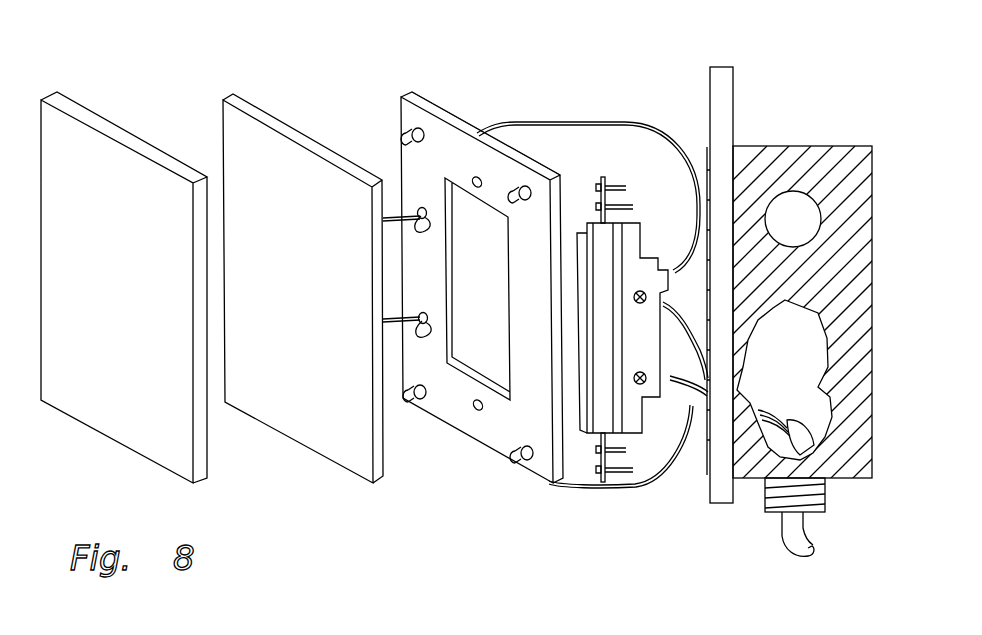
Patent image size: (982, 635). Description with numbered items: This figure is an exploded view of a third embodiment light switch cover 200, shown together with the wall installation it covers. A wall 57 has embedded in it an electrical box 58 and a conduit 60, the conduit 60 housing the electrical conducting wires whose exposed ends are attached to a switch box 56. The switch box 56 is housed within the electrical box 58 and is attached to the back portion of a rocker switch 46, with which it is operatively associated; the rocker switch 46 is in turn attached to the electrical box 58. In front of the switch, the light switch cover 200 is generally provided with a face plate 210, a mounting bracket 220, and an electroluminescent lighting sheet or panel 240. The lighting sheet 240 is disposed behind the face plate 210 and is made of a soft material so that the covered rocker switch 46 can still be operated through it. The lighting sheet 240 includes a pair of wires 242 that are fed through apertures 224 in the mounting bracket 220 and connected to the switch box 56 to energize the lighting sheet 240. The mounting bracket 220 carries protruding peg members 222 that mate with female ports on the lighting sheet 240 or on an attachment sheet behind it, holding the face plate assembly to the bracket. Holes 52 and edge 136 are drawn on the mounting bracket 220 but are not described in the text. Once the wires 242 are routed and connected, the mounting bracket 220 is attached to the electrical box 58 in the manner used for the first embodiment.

The light switch cover 200 is at (298, 75).
The face plate 210 is at (74, 321).
The electroluminescent lighting sheet 240 is at (280, 323).
The mounting bracket 220 is at (428, 168).
The protruding peg members 222 is at (420, 127).
The apertures 224 is at (420, 208).
The wires 242 is at (430, 228).
The mounting holes 52 is at (477, 178).
The plate edge 136 is at (497, 130).
The rocker switch 46 is at (622, 226).
The switch box 56 is at (662, 333).
The wall 57 is at (710, 500).
The electrical box 58 is at (815, 283).
The conduit 60 is at (825, 498).